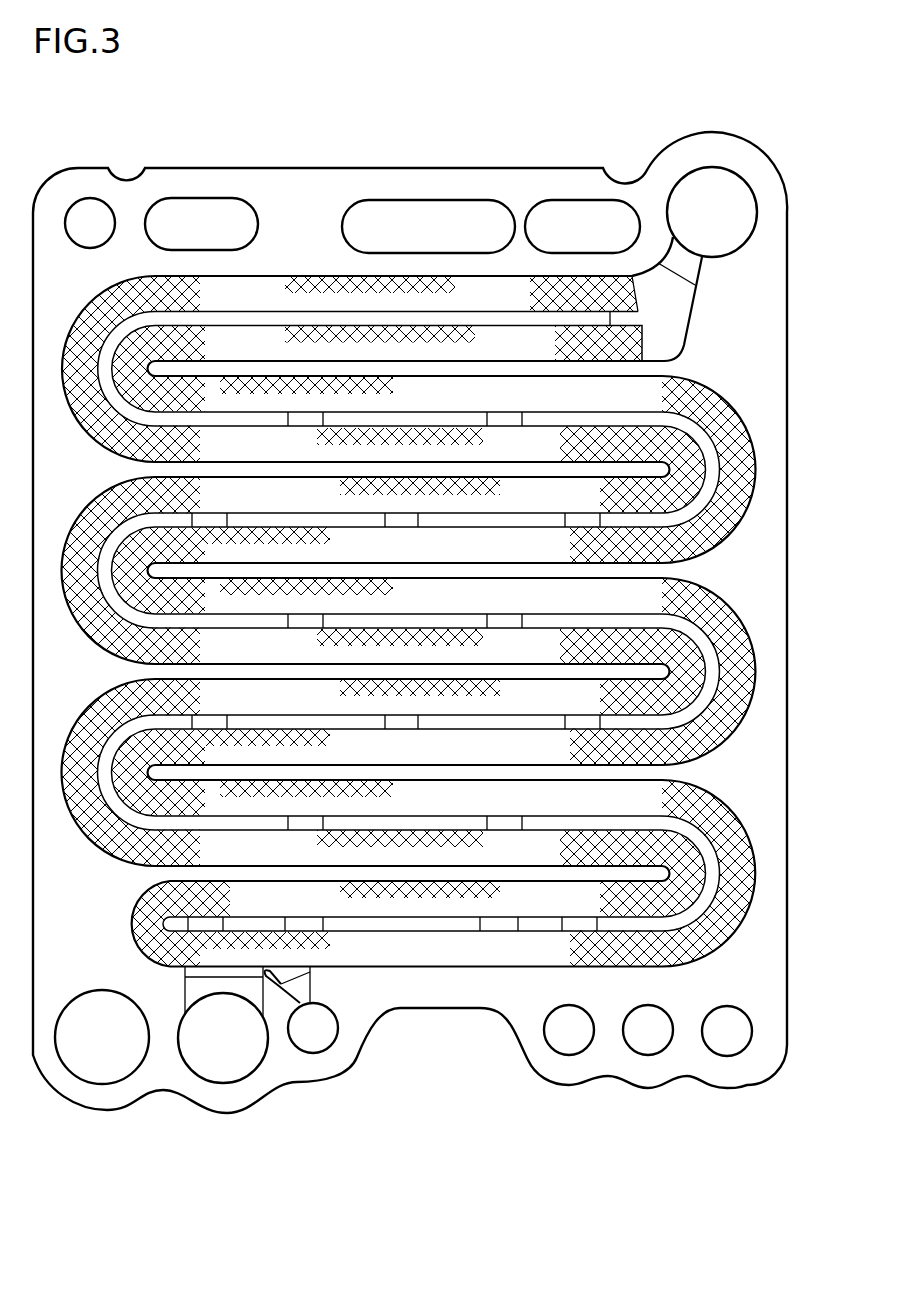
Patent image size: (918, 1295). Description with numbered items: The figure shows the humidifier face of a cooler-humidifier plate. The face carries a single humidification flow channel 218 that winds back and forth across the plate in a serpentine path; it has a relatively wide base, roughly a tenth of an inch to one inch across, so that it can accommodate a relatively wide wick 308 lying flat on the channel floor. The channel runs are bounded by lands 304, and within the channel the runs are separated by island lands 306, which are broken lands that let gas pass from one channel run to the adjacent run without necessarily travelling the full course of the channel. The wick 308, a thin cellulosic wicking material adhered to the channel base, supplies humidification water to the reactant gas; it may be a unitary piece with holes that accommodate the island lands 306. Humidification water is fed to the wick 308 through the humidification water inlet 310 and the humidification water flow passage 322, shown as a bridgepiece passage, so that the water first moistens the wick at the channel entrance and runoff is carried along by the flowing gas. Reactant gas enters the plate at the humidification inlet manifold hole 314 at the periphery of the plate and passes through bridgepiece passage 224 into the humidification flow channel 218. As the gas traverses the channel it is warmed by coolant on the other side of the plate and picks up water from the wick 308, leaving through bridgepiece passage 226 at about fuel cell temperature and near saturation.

The bridgepiece passage 226 is at (686, 266).
The wick 308 is at (637, 301).
The lands 304 is at (456, 664).
The island lands 306 is at (222, 810).
The humidification flow channel 218 is at (135, 942).
The bridgepiece passage 224 is at (195, 992).
The humidification water flow passage 322 is at (310, 990).
The humidification water inlet 310 is at (313, 1043).
The humidification inlet manifold hole 314 is at (228, 1078).